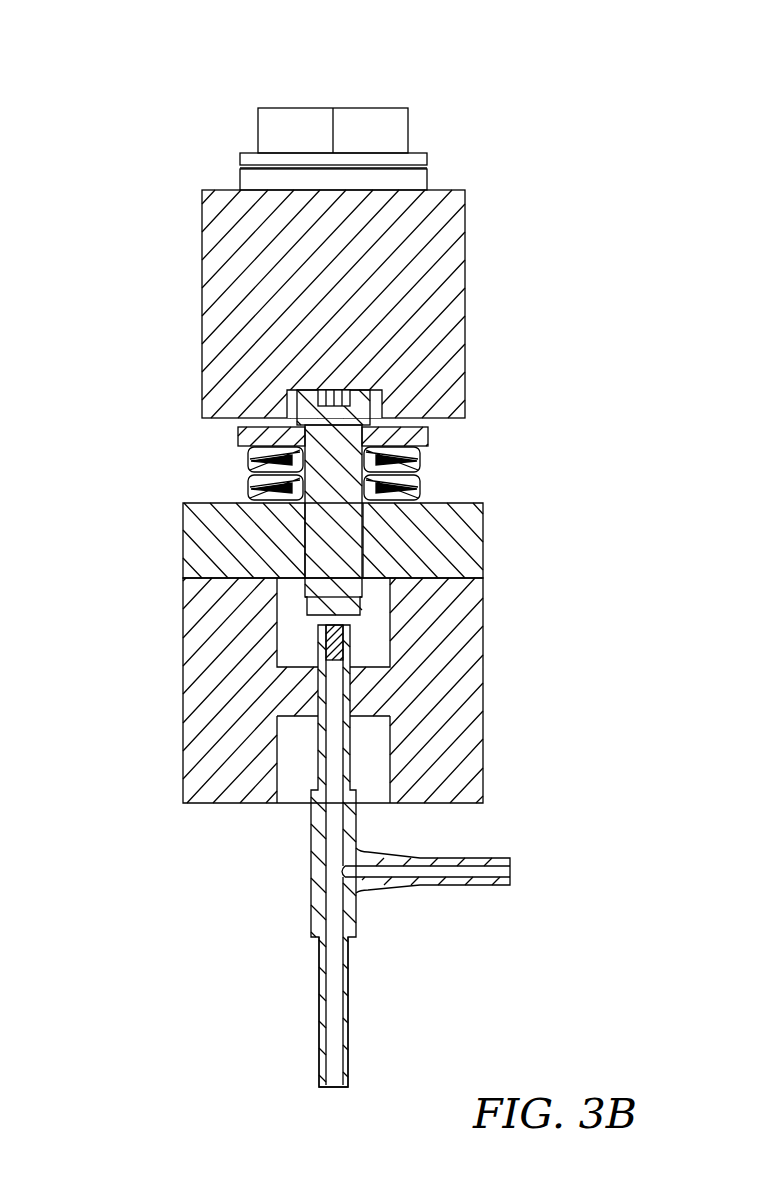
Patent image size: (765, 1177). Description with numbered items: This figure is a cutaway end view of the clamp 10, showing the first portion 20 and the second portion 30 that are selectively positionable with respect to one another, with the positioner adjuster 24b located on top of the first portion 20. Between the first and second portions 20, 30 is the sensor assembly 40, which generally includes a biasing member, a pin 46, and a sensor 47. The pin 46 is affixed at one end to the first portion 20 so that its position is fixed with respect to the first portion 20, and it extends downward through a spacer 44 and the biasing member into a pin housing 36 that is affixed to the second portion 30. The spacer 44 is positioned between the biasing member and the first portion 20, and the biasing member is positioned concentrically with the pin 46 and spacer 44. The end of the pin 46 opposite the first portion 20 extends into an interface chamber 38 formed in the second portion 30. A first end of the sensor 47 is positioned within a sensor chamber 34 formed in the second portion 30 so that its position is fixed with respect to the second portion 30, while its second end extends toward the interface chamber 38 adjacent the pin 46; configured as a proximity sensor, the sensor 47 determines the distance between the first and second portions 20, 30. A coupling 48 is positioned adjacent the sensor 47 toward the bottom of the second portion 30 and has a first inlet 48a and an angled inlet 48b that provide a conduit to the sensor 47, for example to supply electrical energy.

The clamp 10 is at (542, 70).
The first portion 20 is at (202, 348).
The positioner adjuster 24b is at (265, 128).
The second portion 30 is at (183, 740).
The sensor chamber 34 is at (297, 793).
The pin housing 36 is at (183, 548).
The interface chamber 38 is at (333, 502).
The sensor assembly 40 is at (462, 486).
The spacer 44 is at (428, 440).
The pin 46 is at (362, 411).
The sensor 47 is at (343, 640).
The coupling 48 is at (357, 900).
The first inlet 48a is at (319, 1063).
The angled inlet 48b is at (505, 857).